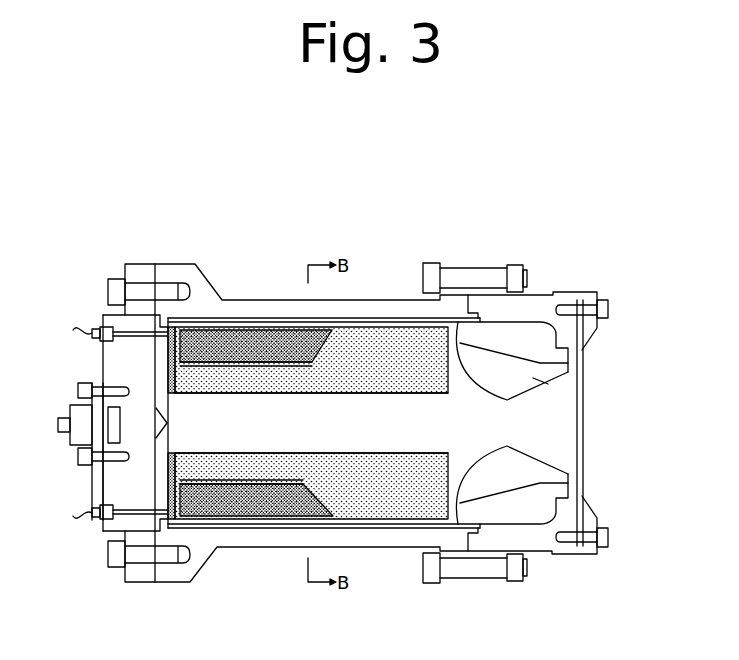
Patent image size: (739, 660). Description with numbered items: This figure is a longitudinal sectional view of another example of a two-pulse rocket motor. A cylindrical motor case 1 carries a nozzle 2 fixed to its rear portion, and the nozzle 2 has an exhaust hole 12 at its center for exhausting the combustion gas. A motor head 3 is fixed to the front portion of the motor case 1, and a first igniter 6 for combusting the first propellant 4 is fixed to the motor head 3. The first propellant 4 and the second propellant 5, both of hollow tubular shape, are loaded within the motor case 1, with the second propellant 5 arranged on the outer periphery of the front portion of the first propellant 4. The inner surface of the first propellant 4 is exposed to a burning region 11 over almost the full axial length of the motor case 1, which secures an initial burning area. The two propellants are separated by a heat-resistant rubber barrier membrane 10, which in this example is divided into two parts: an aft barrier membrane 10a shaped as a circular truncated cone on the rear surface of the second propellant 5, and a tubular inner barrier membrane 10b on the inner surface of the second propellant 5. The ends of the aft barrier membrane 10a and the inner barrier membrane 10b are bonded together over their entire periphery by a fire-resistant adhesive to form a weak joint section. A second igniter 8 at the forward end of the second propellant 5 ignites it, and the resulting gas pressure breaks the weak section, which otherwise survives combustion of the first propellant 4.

The motor case 1 is at (362, 533).
The nozzle 2 is at (545, 380).
The motor head 3 is at (120, 366).
The first propellant 4 is at (406, 322).
The second propellant 5 is at (232, 318).
The first igniter 6 is at (78, 412).
The second igniter 8 is at (232, 316).
The barrier membrane 10 is at (385, 217).
The aft barrier membrane 10a is at (333, 410).
The inner barrier membrane 10b is at (258, 366).
The burning region 11 is at (403, 350).
The exhaust hole 12 is at (500, 422).